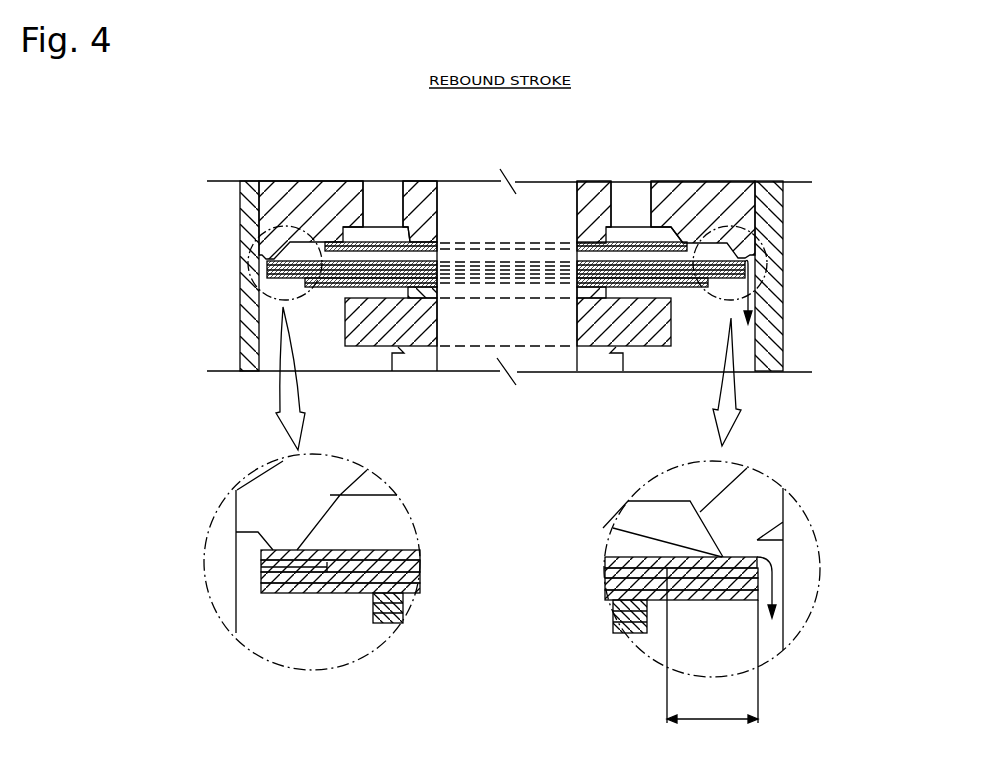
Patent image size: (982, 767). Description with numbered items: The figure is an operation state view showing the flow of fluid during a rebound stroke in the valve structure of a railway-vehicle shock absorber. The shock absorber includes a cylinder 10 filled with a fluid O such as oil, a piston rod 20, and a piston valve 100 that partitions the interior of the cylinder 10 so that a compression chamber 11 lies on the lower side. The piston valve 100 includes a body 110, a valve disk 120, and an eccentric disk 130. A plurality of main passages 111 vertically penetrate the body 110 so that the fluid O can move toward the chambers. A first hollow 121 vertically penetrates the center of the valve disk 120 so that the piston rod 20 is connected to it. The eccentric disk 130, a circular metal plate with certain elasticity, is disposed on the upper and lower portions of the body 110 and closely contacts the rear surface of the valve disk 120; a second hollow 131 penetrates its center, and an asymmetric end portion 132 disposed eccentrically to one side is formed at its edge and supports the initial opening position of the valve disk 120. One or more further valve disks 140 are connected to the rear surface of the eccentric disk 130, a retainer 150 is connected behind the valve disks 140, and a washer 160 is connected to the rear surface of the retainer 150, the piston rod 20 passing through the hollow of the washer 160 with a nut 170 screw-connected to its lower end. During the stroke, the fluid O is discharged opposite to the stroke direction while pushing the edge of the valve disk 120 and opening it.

The cylinder 10 is at (781, 209).
The compression chamber 11 is at (653, 360).
The piston rod 20 is at (544, 196).
The piston valve 100 is at (689, 195).
The body 110 is at (731, 183).
The main passages 111 is at (388, 208).
The valve disk 120 is at (268, 260).
The first hollow 121 is at (435, 247).
The eccentric disk 130 is at (268, 283).
The second hollow 131 is at (440, 246).
The asymmetric end portion 132 is at (668, 578).
The valve disks 140 is at (694, 282).
The retainer 150 is at (407, 290).
The washer 160 is at (600, 338).
The nut 170 is at (414, 365).
The fluid O is at (757, 303).